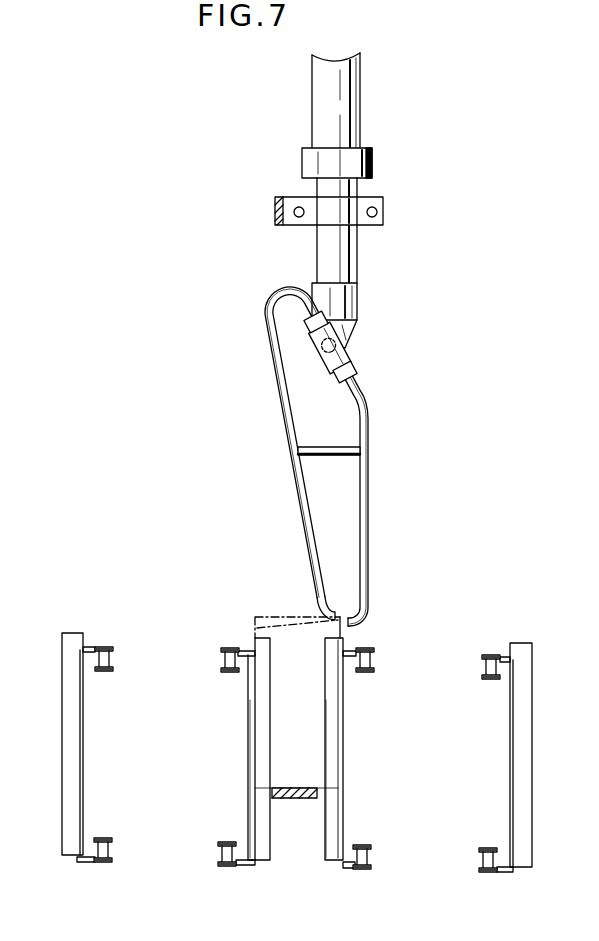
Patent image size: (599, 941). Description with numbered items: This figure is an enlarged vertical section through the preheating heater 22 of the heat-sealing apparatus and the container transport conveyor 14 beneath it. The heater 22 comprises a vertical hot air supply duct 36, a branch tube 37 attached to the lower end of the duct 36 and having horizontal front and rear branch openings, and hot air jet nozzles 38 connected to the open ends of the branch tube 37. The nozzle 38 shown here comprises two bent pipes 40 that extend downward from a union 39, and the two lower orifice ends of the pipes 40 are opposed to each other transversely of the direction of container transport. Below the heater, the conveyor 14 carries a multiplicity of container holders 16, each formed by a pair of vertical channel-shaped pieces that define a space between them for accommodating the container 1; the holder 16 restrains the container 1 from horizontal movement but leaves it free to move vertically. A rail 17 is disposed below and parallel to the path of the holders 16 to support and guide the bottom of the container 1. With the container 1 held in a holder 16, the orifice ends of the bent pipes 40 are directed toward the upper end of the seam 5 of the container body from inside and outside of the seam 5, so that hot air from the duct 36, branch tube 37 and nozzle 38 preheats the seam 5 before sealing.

The container 1 is at (338, 722).
The seam 5 is at (285, 627).
The container transport conveyor 14 is at (110, 580).
The container holder 16 is at (327, 845).
The rail 17 is at (297, 798).
The preheating heater 22 is at (410, 232).
The hot air supply duct 36 is at (355, 110).
The branch tube 37 is at (347, 330).
The hot air jet nozzle 38 is at (342, 603).
The union 39 is at (348, 352).
The bent pipe 40 is at (308, 515).